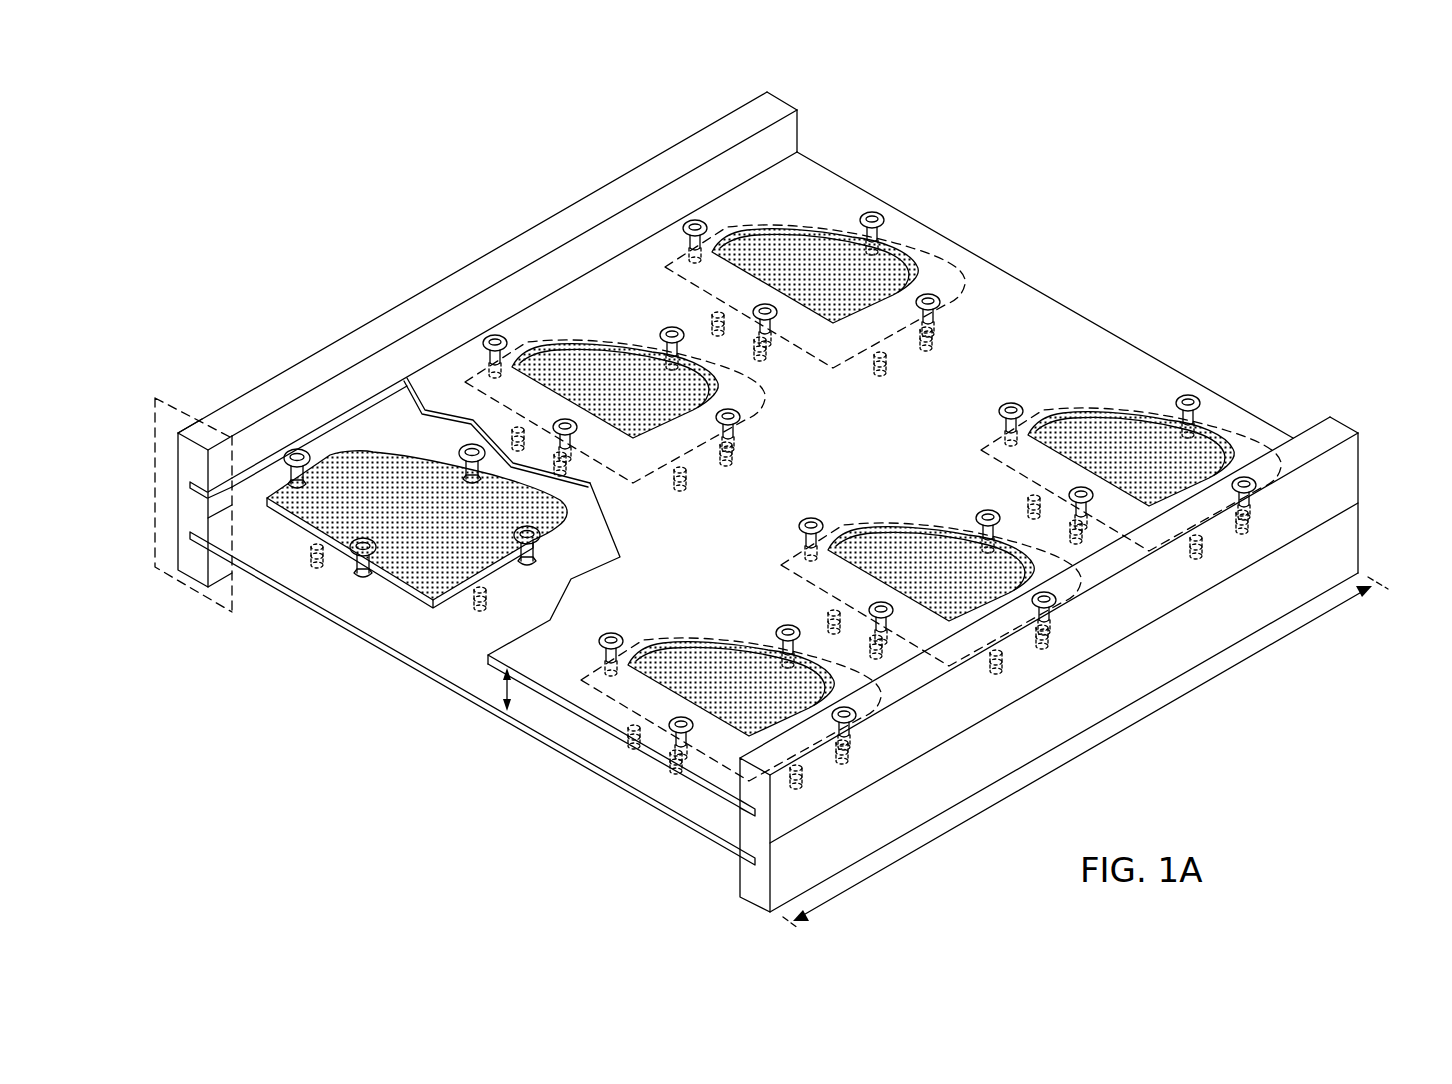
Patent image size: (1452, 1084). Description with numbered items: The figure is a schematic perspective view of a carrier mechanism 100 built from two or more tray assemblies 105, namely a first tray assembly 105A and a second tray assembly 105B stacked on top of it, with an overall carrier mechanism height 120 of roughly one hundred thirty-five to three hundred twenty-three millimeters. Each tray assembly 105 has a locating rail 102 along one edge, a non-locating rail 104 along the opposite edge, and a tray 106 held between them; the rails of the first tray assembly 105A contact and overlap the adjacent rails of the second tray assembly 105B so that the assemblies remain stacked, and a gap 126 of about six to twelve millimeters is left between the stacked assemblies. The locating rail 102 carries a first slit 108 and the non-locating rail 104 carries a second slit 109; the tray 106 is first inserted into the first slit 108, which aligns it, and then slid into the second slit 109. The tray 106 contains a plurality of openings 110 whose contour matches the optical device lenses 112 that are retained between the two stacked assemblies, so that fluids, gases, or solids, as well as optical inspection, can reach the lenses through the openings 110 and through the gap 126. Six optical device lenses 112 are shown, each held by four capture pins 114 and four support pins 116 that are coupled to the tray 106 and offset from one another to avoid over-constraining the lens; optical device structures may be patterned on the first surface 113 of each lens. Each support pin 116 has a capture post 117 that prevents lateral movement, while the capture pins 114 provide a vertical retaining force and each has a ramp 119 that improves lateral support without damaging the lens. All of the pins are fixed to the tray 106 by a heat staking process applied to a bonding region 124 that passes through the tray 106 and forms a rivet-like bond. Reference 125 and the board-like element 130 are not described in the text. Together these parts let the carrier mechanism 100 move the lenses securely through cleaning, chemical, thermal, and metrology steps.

The carrier mechanism 100 is at (1185, 157).
The locating rail 102 is at (1340, 420).
The non-locating rail 104 is at (785, 98).
The tray assembly 105 is at (1370, 456).
The first tray assembly 105A is at (735, 908).
The second tray assembly 105B is at (785, 826).
The tray 106 is at (1040, 292).
The first slit 108 is at (770, 815).
The second slit 109 is at (190, 487).
The openings 110 is at (908, 245).
The optical device lenses 112 is at (828, 250).
The first surface 113 is at (1200, 462).
The capture pins 114 is at (1188, 396).
The support pins 116 is at (1025, 488).
The capture post 117 is at (1043, 408).
The ramp 119 is at (1105, 520).
The carrier mechanism height 120 is at (1155, 720).
The bonding region 124 is at (1050, 593).
The block envelope 125 is at (155, 585).
The gap 126 is at (505, 695).
The circuit board 130 is at (417, 527).